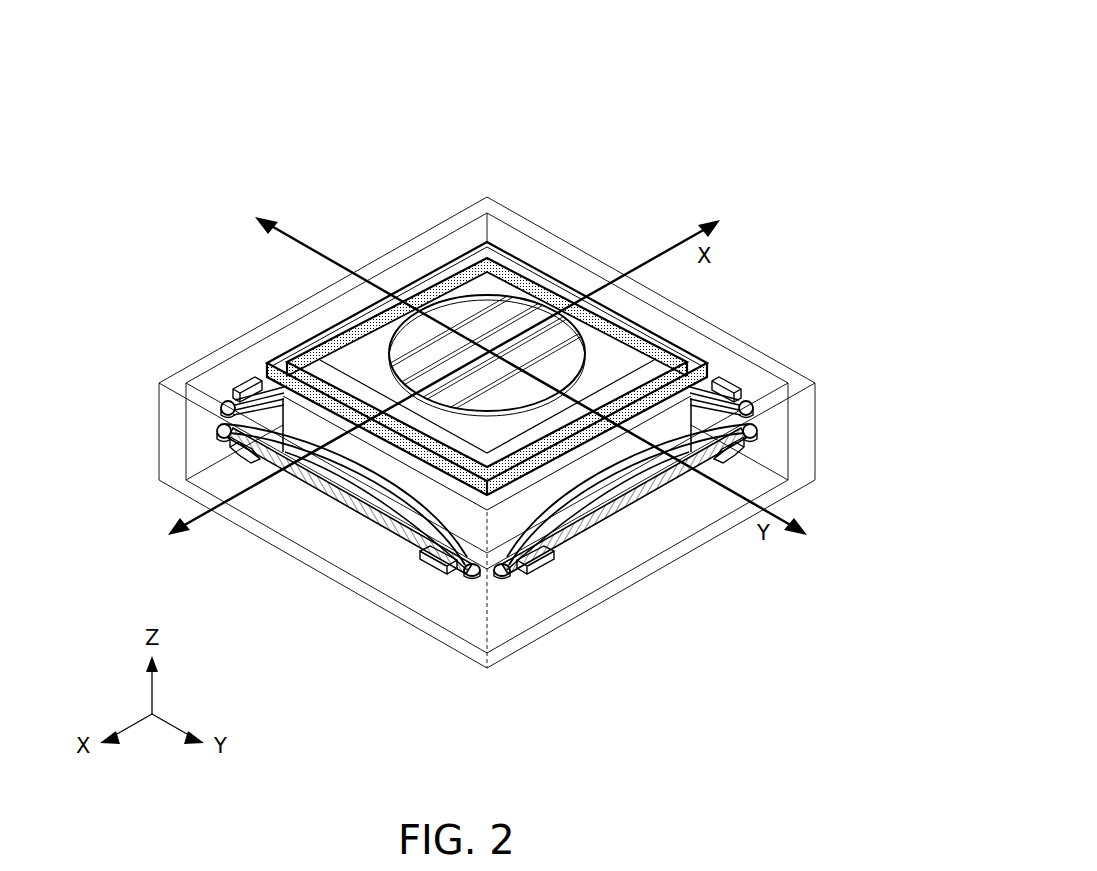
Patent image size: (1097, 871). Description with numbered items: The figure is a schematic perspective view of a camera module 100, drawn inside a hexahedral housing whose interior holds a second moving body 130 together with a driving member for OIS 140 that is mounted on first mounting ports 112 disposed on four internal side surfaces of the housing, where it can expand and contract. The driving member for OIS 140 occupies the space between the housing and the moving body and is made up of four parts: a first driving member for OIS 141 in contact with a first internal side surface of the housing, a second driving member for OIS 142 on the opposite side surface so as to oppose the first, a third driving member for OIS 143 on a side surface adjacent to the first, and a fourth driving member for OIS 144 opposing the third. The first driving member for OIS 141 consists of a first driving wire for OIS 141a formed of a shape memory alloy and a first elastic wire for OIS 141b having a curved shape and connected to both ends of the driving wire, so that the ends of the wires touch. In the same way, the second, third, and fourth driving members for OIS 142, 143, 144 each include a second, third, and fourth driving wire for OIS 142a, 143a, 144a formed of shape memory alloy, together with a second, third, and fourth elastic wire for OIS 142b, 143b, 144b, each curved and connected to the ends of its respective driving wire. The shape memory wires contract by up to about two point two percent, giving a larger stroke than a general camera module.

The camera module 100 is at (515, 90).
The first mounting ports 112 is at (435, 558).
The second moving body 130 is at (493, 280).
The driving member for OIS 140 is at (728, 12).
The first driving member for OIS 141 is at (260, 583).
The first driving wire for OIS 141a is at (400, 540).
The first elastic wire for OIS 141b is at (384, 480).
The second driving member for OIS 142 is at (866, 305).
The second driving wire for OIS 142a is at (715, 388).
The second elastic wire for OIS 142b is at (726, 398).
The third driving member for OIS 143 is at (720, 583).
The third driving wire for OIS 143a is at (580, 538).
The third elastic wire for OIS 143b is at (597, 480).
The fourth driving member for OIS 144 is at (235, 287).
The fourth driving wire for OIS 144a is at (250, 387).
The fourth elastic wire for OIS 144b is at (228, 402).